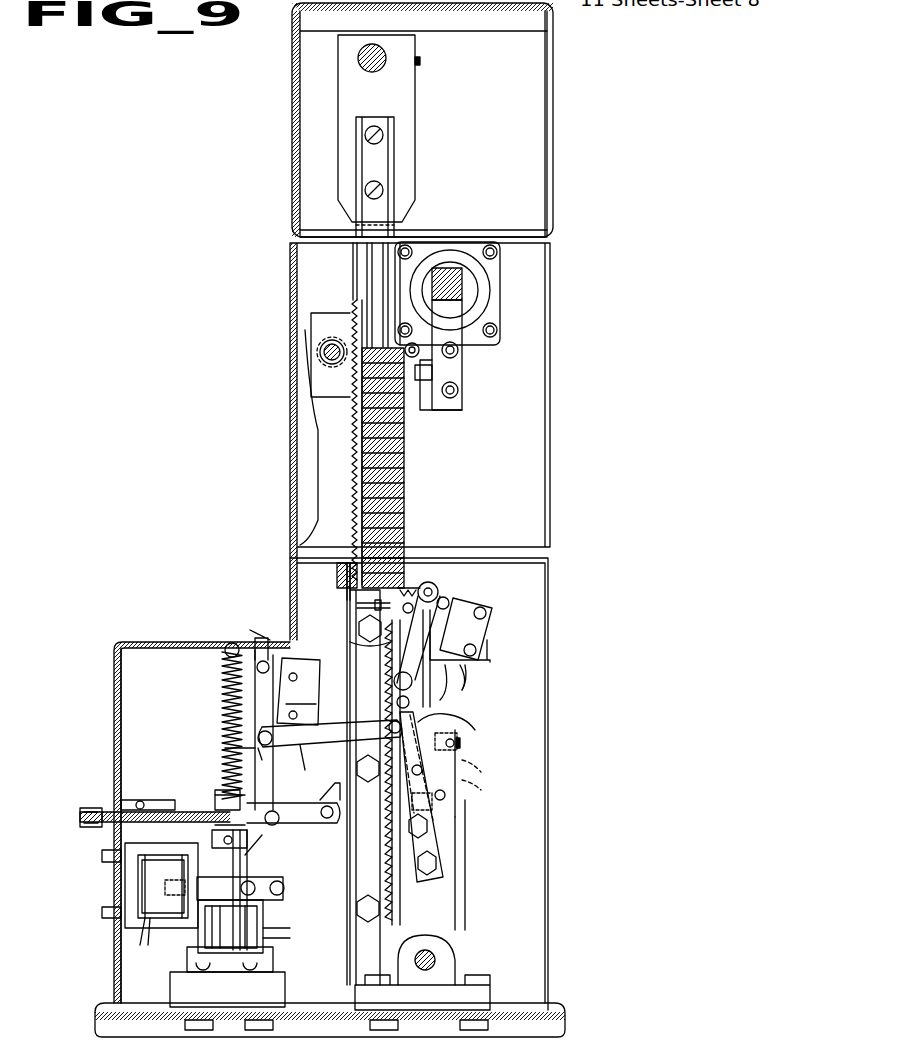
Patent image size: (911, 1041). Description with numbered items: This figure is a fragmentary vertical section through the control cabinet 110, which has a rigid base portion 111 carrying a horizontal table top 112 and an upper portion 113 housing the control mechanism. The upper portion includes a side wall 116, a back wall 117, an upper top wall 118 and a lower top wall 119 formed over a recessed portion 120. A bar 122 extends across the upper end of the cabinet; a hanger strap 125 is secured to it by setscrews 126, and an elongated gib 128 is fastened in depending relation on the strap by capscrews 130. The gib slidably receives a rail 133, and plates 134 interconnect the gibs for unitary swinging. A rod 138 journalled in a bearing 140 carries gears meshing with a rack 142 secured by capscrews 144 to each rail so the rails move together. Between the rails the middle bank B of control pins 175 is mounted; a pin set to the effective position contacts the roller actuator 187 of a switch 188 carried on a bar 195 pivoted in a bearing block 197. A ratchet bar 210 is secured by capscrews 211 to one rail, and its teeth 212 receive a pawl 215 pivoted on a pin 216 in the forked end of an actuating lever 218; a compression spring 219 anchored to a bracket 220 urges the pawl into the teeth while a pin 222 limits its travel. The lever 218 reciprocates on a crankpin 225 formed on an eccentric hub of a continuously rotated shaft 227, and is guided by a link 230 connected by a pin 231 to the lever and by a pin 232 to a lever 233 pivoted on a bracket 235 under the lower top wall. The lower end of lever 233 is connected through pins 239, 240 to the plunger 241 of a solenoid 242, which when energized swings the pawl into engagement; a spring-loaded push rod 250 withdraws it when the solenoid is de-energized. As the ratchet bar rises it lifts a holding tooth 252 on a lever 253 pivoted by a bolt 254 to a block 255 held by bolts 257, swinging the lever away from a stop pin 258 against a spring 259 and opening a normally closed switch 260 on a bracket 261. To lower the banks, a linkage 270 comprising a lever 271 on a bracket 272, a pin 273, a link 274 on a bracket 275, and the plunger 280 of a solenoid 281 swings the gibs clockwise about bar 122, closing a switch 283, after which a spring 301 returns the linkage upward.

The control cabinet 110 is at (562, 131).
The base portion 111 is at (565, 1030).
The table top 112 is at (340, 1008).
The upper portion of the cabinet 113 is at (552, 174).
The side wall 116 is at (300, 378).
The back wall 117 is at (292, 256).
The upper top wall 118 is at (458, 10).
The lower top wall 119 is at (175, 642).
The recessed portion 120 is at (150, 672).
The bar 122 is at (384, 70).
The hanger strap 125 is at (410, 103).
The setscrews 126 is at (420, 62).
The gib 128 is at (390, 190).
The capscrews 130 is at (376, 190).
The rail 133 is at (370, 283).
The plates 134 is at (337, 568).
The rod 138 is at (322, 350).
The bearing 140 is at (311, 322).
The rack 142 is at (345, 318).
The capscrews 144 is at (385, 310).
The control pins 175 is at (404, 430).
The roller actuator 187 is at (420, 345).
The switch 188 is at (432, 405).
The bar 195 is at (452, 268).
The bearing block 197 is at (505, 255).
The ratchet bar 210 is at (370, 752).
The capscrews 211 is at (360, 630).
The teeth 212 is at (405, 880).
The pawl 215 is at (475, 730).
The pin 216 is at (466, 782).
The actuating lever 218 is at (465, 816).
The compression spring 219 is at (491, 771).
The bracket 220 is at (460, 748).
The pin 222 is at (445, 796).
The crankpin 225 is at (432, 950).
The shaft 227 is at (436, 962).
The link 230 is at (297, 757).
The pin 231 is at (392, 732).
The pin 232 is at (240, 740).
The lever 233 is at (255, 722).
The bracket 235 is at (262, 652).
The pin 239 is at (284, 884).
The pin 240 is at (283, 902).
The plunger 241 is at (268, 930).
The solenoid 242 is at (148, 882).
The push rod 250 is at (80, 826).
The holding tooth 252 is at (352, 645).
The lever 253 is at (467, 594).
The bolt 254 is at (412, 681).
The block 255 is at (410, 701).
The bolts 257 is at (420, 716).
The stop pin 258 is at (357, 602).
The spring 259 is at (418, 588).
The switch 260 is at (467, 594).
The bracket 261 is at (490, 672).
The linkage 270 is at (144, 809).
The lever 271 is at (340, 780).
The bracket 272 is at (265, 870).
The pin 273 is at (218, 794).
The link 274 is at (152, 810).
The bracket 275 is at (122, 808).
The plunger 280 is at (228, 852).
The solenoid 281 is at (265, 950).
The switch 283 is at (298, 691).
The spring 301 is at (222, 702).
The middle bank B is at (480, 470).